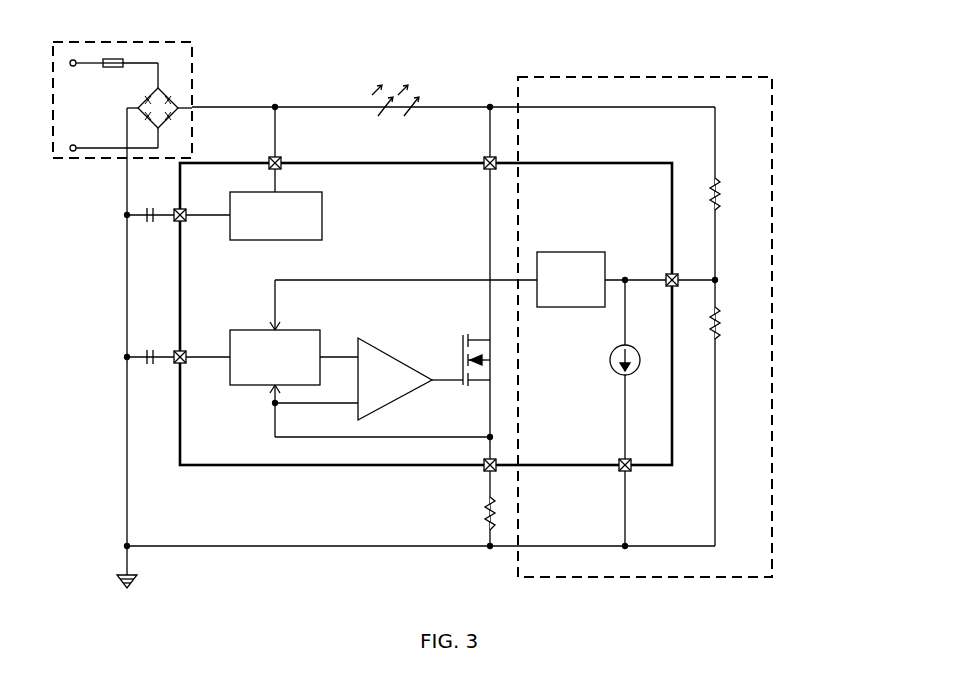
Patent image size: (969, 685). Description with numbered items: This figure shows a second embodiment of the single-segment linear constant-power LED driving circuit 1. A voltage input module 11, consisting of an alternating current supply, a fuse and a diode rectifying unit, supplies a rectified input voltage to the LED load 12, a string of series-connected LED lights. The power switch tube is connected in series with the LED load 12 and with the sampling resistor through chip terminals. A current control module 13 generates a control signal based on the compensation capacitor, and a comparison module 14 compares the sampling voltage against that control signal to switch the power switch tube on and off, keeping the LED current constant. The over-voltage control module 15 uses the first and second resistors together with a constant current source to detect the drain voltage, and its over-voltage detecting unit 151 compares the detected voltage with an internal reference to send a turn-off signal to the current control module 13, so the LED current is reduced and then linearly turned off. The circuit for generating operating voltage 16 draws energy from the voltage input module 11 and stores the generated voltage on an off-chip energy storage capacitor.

The single-segment linear constant-power LED driving circuit 1 is at (641, 43).
The voltage input module 11 is at (192, 82).
The LED load 12 is at (396, 106).
The current control module 13 is at (322, 346).
The comparison module 14 is at (392, 357).
The over-voltage control module 15 is at (772, 197).
The circuit for generating operating voltage 16 is at (322, 216).
The over-voltage detecting unit 151 is at (572, 252).